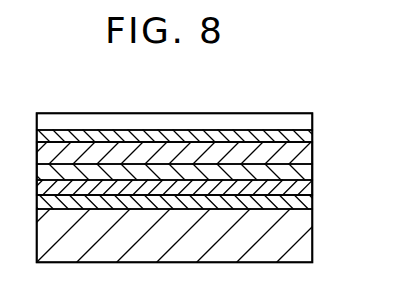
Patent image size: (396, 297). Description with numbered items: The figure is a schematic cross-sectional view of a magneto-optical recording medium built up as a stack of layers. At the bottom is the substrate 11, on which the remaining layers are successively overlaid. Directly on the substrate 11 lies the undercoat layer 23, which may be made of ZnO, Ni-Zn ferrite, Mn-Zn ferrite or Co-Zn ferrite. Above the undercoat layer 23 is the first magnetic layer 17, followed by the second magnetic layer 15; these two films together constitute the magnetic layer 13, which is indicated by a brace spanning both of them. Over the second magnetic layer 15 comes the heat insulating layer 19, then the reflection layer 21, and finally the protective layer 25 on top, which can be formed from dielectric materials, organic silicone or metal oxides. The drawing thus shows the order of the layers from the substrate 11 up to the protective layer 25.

The substrate 11 is at (312, 245).
The magnetic layer 13 is at (359, 150).
The second magnetic layer 15 is at (312, 173).
The first magnetic layer 17 is at (312, 188).
The heat insulating layer 19 is at (312, 152).
The reflection layer 21 is at (312, 133).
The undercoat layer 23 is at (312, 202).
The protective layer 25 is at (312, 117).